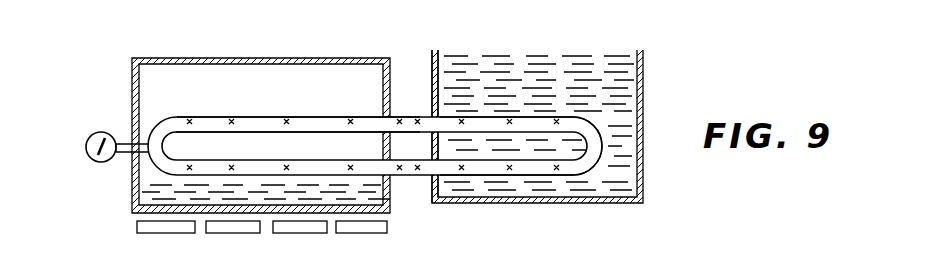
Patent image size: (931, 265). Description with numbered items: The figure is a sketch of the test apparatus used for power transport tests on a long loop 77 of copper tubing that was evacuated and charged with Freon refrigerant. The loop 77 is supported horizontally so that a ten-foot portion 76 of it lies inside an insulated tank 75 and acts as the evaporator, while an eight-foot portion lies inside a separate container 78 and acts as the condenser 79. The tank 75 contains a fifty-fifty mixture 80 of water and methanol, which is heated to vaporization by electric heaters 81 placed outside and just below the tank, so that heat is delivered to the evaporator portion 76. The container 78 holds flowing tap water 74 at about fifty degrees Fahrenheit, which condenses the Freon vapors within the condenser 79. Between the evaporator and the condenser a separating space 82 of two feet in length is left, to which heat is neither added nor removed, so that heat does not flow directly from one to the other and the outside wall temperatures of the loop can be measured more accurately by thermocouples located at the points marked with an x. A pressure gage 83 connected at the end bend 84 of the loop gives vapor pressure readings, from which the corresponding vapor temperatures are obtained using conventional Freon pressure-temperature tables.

The flowing tap water 74 is at (623, 145).
The insulated tank 75 is at (135, 187).
The portion of the loop 76 is at (222, 114).
The loop 77 is at (341, 114).
The container 78 is at (643, 182).
The condenser 79 is at (504, 112).
The mixture of water and methanol 80 is at (133, 207).
The electric heaters 81 is at (185, 235).
The separating space 82 is at (410, 75).
The pressure gage 83 is at (86, 142).
The end bend 84 is at (152, 165).